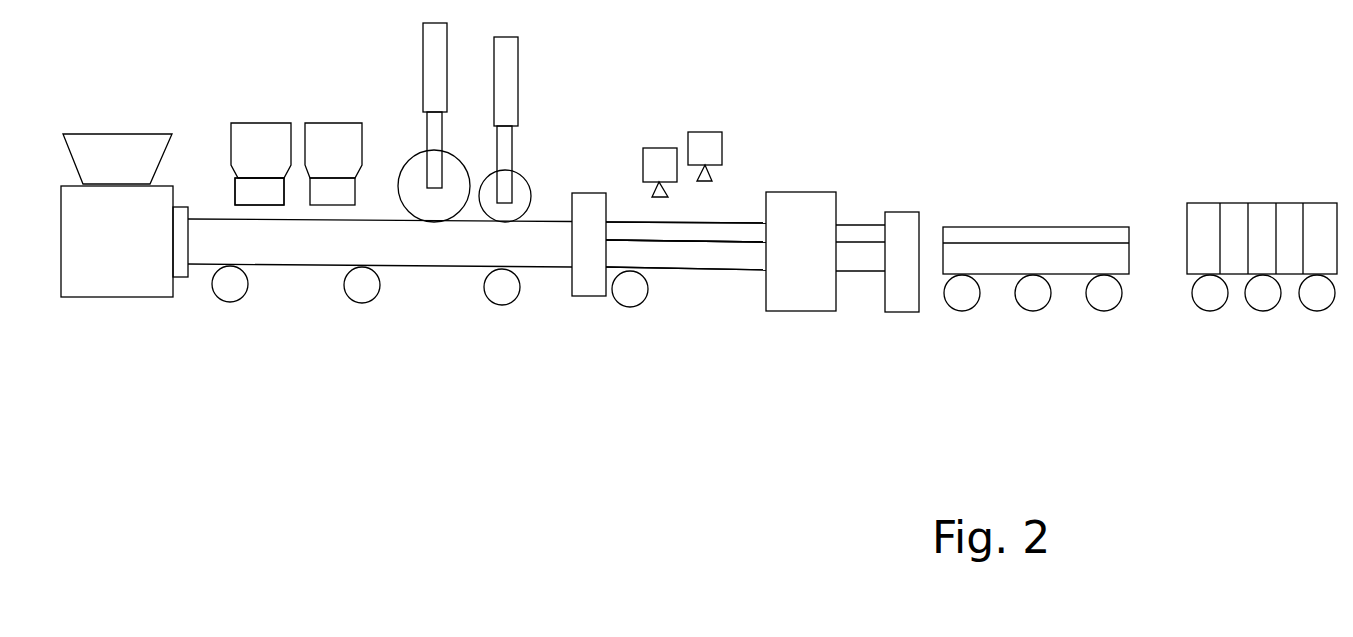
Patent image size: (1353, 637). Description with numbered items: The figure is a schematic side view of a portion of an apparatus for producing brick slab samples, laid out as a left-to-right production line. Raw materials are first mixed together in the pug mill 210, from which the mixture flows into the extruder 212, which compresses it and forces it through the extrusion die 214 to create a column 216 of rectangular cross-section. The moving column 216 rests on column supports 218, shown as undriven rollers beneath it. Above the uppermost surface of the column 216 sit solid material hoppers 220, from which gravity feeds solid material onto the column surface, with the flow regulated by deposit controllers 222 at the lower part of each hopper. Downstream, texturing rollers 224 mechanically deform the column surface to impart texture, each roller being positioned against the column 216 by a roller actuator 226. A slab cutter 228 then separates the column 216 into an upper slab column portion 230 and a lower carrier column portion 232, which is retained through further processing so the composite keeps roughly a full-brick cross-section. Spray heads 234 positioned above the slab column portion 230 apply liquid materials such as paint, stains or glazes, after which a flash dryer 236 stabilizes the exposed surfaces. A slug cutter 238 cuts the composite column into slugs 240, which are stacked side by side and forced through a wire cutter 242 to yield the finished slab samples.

The pug mill 210 is at (100, 145).
The extruder 212 is at (87, 275).
The extrusion die 214 is at (177, 270).
The column 216 is at (257, 247).
The column supports 218 is at (362, 290).
The solid material hoppers 220 is at (254, 133).
The deposit controllers 222 is at (237, 193).
The texturing rollers 224 is at (525, 165).
The roller actuator 226 is at (530, 90).
The slab cutter 228 is at (588, 285).
The slab column portion 230 is at (702, 232).
The carrier column portion 232 is at (653, 253).
The spray heads 234 is at (728, 163).
The flash dryer 236 is at (803, 203).
The slug cutter 238 is at (902, 220).
The slugs 240 is at (1028, 220).
The wire cutter 242 is at (1258, 198).